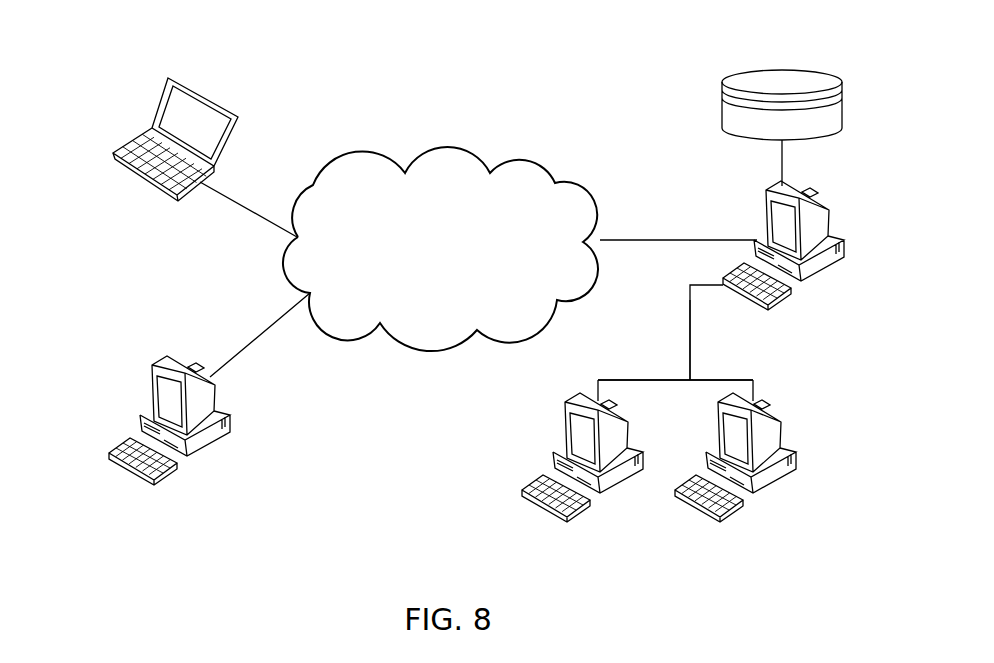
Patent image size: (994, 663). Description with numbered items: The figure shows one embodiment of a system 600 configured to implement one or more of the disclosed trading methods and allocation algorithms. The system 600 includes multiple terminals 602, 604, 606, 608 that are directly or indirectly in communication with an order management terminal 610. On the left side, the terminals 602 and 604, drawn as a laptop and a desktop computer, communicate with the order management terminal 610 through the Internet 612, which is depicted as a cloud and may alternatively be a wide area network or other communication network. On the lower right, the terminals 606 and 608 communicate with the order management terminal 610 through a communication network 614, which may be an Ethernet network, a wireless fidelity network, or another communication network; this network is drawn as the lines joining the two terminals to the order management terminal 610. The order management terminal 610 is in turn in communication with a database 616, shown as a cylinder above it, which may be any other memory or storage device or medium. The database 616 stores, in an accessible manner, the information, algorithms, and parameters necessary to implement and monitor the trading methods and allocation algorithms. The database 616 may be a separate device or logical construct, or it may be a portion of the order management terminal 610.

The system 600 is at (452, 50).
The terminal 602 is at (137, 132).
The terminal 604 is at (155, 353).
The terminal 606 is at (539, 511).
The terminal 608 is at (684, 509).
The order management terminal 610 is at (755, 228).
The Internet 612 is at (423, 289).
The communication network 614 is at (660, 368).
The database 616 is at (717, 94).